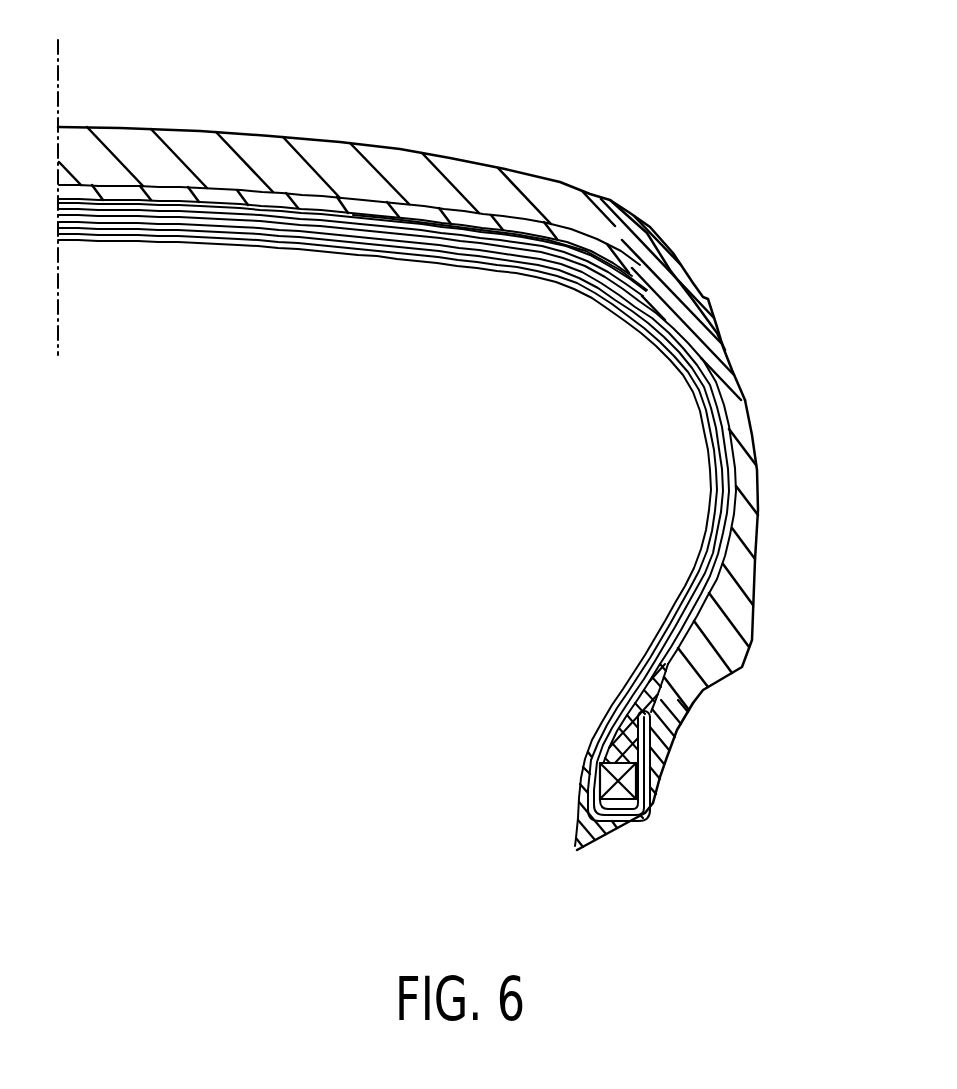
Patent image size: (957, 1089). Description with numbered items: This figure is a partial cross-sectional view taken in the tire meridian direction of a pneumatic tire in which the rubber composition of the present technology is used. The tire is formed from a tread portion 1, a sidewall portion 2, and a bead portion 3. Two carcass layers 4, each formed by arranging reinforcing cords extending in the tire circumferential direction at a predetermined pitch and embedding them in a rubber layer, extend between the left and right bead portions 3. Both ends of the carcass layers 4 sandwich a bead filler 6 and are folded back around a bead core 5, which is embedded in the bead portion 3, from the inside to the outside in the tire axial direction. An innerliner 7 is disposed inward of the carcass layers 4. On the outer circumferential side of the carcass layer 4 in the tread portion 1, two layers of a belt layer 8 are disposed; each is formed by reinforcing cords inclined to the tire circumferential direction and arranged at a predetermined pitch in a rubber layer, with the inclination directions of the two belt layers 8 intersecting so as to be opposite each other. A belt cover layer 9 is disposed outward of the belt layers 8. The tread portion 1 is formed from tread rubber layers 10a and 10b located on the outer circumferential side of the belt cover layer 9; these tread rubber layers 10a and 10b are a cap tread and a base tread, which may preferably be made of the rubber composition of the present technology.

The tread portion 1 is at (249, 130).
The sidewall portion 2 is at (762, 475).
The bead portion 3 is at (661, 812).
The carcass layer 4 is at (717, 408).
The bead core 5 is at (630, 790).
The bead filler 6 is at (655, 690).
The innerliner 7 is at (707, 434).
The belt layer 8 is at (187, 220).
The belt cover layer 9 is at (353, 143).
The tread rubber layer 10a is at (583, 202).
The tread rubber layer 10b is at (440, 205).